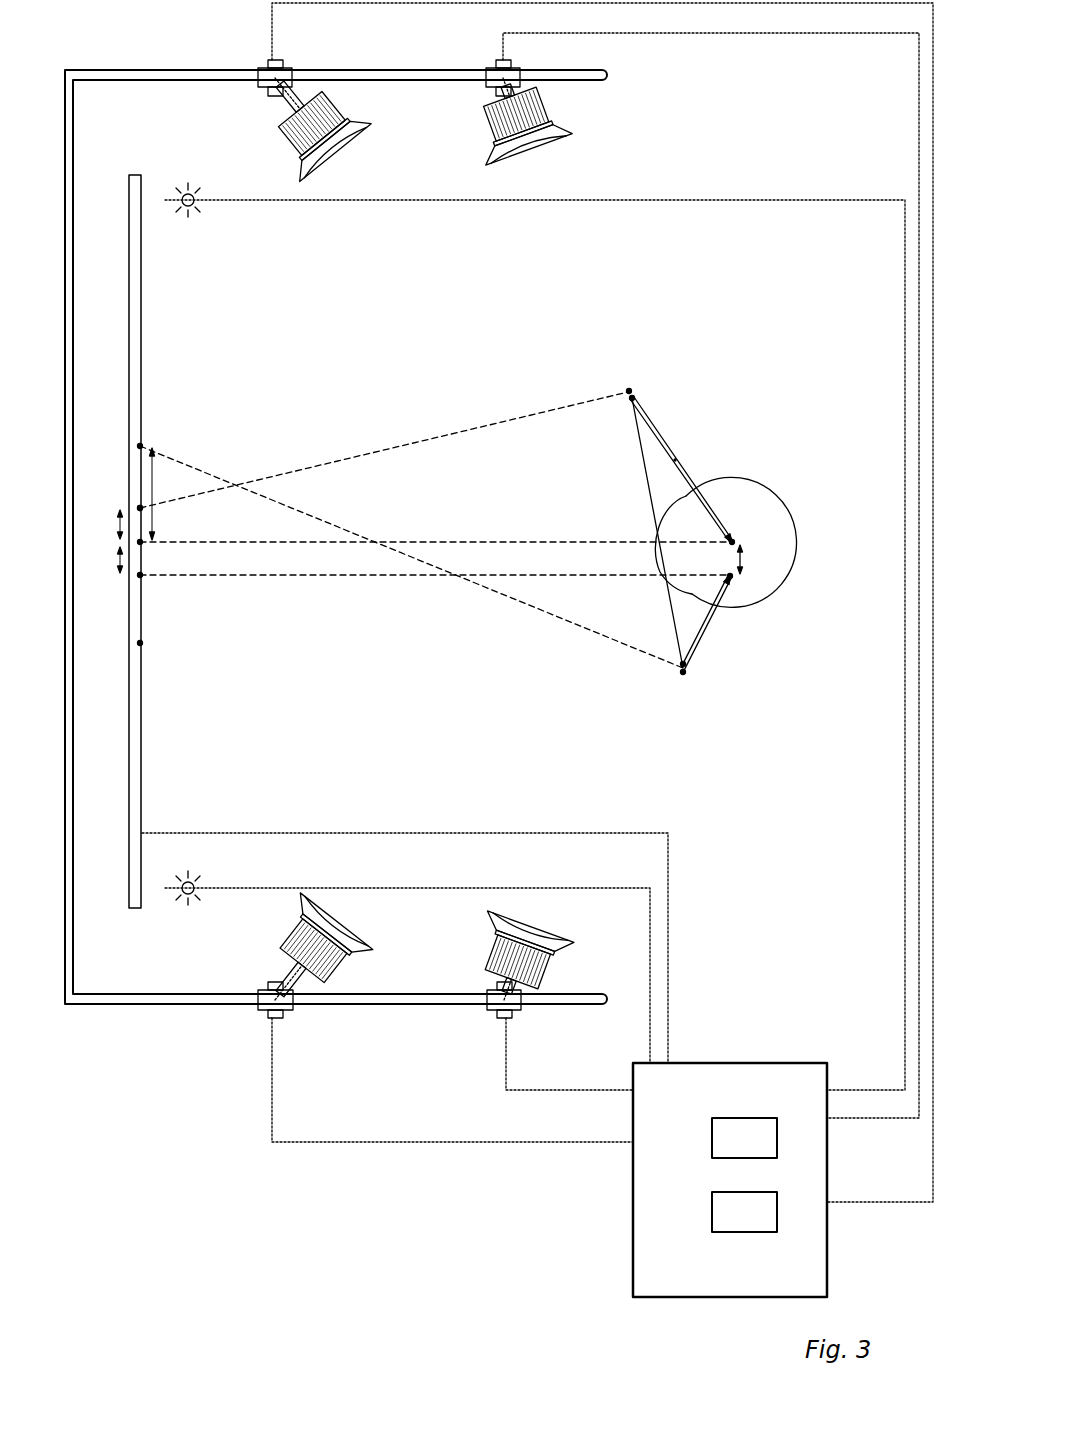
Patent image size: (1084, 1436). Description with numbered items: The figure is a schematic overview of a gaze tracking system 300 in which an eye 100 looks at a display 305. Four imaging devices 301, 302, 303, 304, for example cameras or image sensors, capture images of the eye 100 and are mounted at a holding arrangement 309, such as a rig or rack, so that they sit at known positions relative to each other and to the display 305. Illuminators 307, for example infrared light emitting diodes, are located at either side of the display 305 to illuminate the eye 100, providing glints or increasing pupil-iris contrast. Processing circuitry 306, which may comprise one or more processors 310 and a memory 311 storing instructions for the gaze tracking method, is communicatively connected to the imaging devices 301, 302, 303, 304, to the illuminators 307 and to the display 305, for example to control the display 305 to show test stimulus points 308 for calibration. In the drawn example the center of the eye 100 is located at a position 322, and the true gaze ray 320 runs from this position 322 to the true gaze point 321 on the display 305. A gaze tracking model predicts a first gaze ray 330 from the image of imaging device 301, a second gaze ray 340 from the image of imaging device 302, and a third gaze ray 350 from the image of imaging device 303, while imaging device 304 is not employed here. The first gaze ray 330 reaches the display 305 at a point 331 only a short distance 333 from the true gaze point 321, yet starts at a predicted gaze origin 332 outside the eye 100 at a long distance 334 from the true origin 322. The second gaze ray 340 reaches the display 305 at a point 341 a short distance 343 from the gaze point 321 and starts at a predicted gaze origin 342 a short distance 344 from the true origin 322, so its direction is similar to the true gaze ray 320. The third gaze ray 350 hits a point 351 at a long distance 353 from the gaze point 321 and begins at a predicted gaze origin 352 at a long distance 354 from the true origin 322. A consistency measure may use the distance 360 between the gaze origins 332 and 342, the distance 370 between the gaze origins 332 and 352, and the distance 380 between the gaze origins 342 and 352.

The eye 100 is at (797, 537).
The gaze tracking system 300 is at (240, 1236).
The imaging device 301 is at (563, 133).
The imaging device 302 is at (527, 915).
The imaging device 303 is at (357, 138).
The imaging device 304 is at (343, 902).
The display 305 is at (142, 772).
The processing circuitry 306 is at (682, 1125).
The illuminator 307 is at (195, 205).
The test stimulus point 308 is at (141, 644).
The holding arrangement 309 is at (147, 70).
The processor 310 is at (760, 1118).
The memory 311 is at (712, 1212).
The true gaze ray 320 is at (440, 541).
The gaze point 321 is at (141, 543).
The position 322 is at (740, 540).
The first gaze ray 330 is at (457, 430).
The point 331 is at (142, 508).
The predicted gaze origin 332 is at (630, 392).
The distance 333 is at (116, 512).
The distance 334 is at (672, 456).
The second gaze ray 340 is at (362, 577).
The point 341 is at (141, 576).
The predicted gaze origin 342 is at (735, 578).
The distance 343 is at (118, 568).
The distance 344 is at (745, 560).
The third gaze ray 350 is at (552, 620).
The point 351 is at (140, 446).
The predicted gaze origin 352 is at (683, 674).
The distance 353 is at (153, 487).
The distance 354 is at (681, 665).
The distance 360 is at (640, 445).
The distance 370 is at (650, 482).
The distance 380 is at (693, 615).